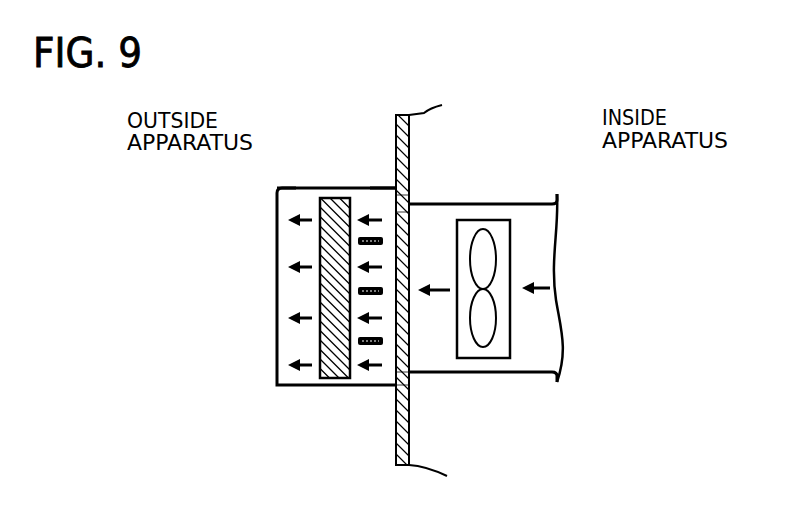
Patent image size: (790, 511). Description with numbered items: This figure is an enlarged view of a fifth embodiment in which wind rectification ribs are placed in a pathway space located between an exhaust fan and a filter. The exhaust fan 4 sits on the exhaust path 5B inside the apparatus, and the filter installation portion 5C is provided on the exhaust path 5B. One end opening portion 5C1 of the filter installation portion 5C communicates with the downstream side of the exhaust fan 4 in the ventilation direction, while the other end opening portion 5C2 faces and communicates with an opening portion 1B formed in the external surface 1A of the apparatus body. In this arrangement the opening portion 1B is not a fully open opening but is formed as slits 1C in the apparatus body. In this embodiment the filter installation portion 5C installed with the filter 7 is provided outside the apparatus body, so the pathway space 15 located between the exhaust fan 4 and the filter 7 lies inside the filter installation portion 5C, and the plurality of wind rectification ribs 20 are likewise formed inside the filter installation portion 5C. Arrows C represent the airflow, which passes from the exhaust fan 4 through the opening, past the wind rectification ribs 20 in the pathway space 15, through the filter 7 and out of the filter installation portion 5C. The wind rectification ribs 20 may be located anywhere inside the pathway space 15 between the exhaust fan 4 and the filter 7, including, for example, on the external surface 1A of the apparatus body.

The external surface 1A is at (396, 449).
The opening portion 1B is at (398, 211).
The slits 1C is at (410, 378).
The exhaust fan 4 is at (510, 340).
The exhaust path 5B is at (548, 255).
The filter installation portion 5C is at (290, 390).
The one end opening portion 5C1 is at (403, 192).
The other end opening portion 5C2 is at (277, 189).
The filter 7 is at (335, 388).
The pathway space 15 is at (376, 380).
The wind rectification ribs 20 is at (384, 241).
The arrows representing airflow C is at (548, 292).